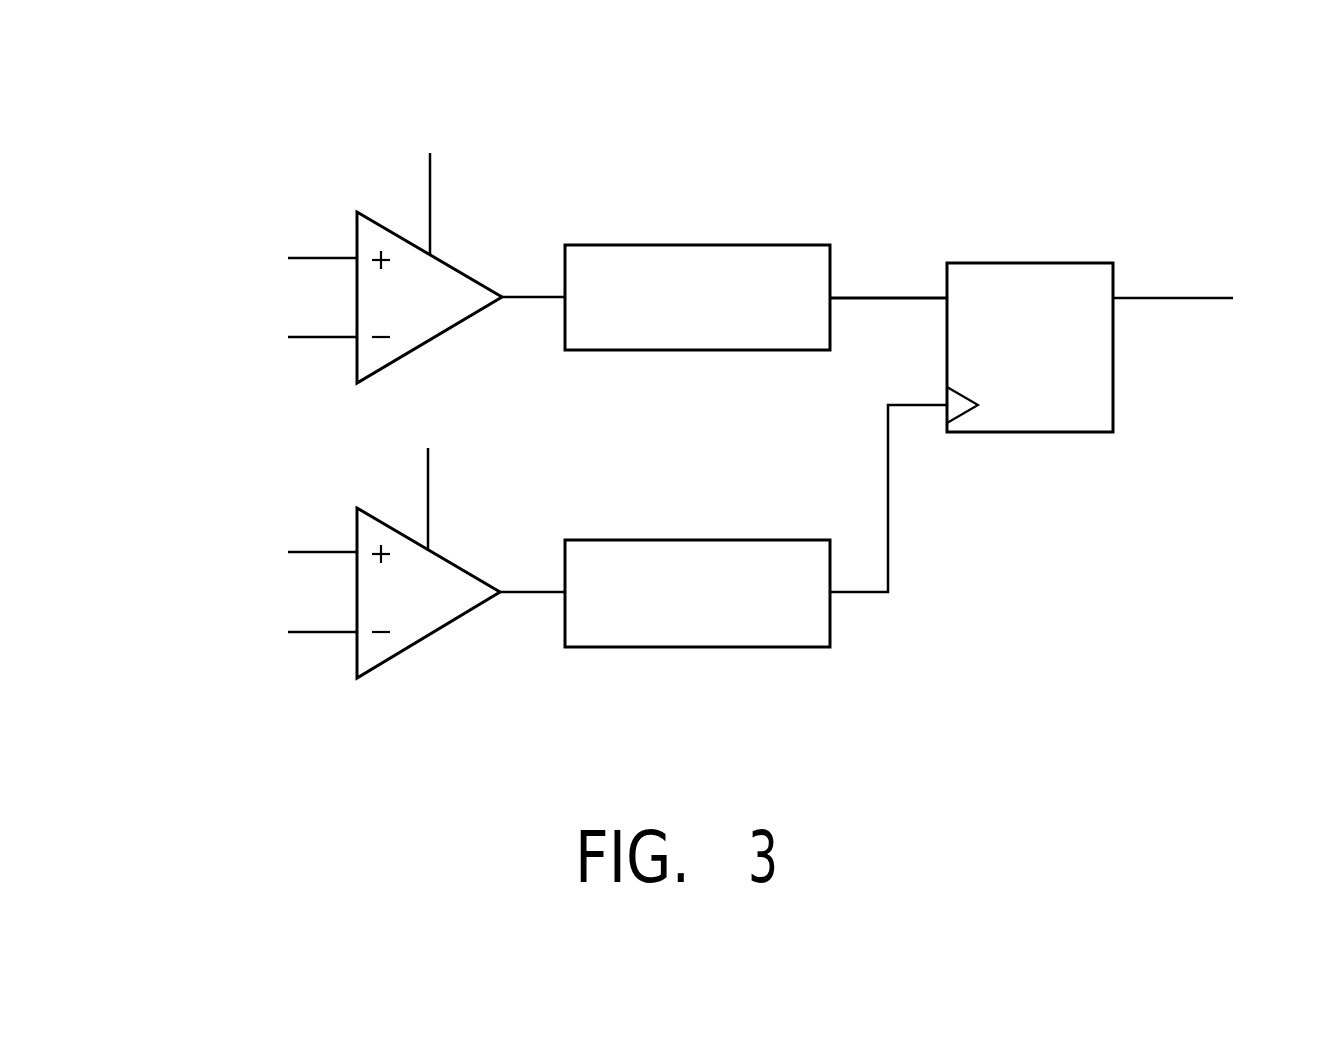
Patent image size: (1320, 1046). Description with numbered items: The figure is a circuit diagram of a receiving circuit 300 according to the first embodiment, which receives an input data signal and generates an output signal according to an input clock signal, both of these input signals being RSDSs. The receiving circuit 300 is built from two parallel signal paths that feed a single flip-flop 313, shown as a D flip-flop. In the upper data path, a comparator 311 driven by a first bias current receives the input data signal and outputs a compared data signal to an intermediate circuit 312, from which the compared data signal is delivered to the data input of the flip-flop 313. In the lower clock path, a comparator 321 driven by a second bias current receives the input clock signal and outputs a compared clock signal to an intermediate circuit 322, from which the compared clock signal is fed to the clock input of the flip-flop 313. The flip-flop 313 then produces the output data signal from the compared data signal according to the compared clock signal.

The receiving circuit 300 is at (190, 70).
The comparator 311 is at (428, 340).
The intermediate circuit 312 is at (695, 245).
The flip-flop 313 is at (1027, 263).
The comparator 321 is at (430, 637).
The intermediate circuit 322 is at (695, 540).